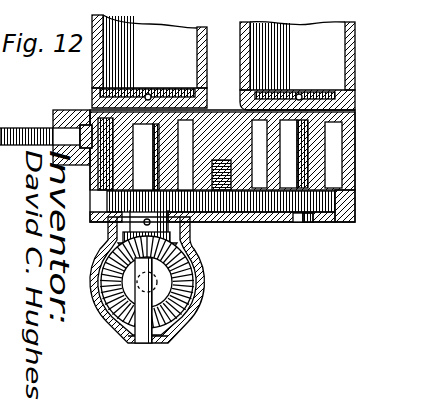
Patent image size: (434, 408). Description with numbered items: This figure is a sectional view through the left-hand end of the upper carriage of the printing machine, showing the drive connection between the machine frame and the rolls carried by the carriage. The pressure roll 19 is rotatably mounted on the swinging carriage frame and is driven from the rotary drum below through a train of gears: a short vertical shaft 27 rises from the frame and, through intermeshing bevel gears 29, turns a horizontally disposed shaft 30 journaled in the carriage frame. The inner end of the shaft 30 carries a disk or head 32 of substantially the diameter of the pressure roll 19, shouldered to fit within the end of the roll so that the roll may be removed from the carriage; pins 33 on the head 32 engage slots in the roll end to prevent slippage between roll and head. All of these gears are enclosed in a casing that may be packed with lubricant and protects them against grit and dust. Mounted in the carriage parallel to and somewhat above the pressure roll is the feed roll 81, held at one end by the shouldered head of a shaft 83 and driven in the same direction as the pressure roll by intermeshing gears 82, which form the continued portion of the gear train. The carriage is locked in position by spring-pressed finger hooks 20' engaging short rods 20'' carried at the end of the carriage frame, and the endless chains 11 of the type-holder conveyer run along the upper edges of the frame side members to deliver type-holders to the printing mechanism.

The endless chains 11 is at (165, 13).
The pressure roll 19 is at (180, 35).
The disk or head 32 is at (170, 96).
The pins 33 is at (148, 94).
The feed roll 81 is at (355, 50).
The shaft 83 is at (302, 156).
The intermeshing gears 82 is at (247, 227).
The spring-pressed finger hooks 20' is at (46, 127).
The short rods 20'' is at (83, 164).
The horizontally disposed shaft 30 is at (90, 222).
The short vertical shaft 27 is at (172, 287).
The intermeshing bevel gears 29 is at (160, 280).